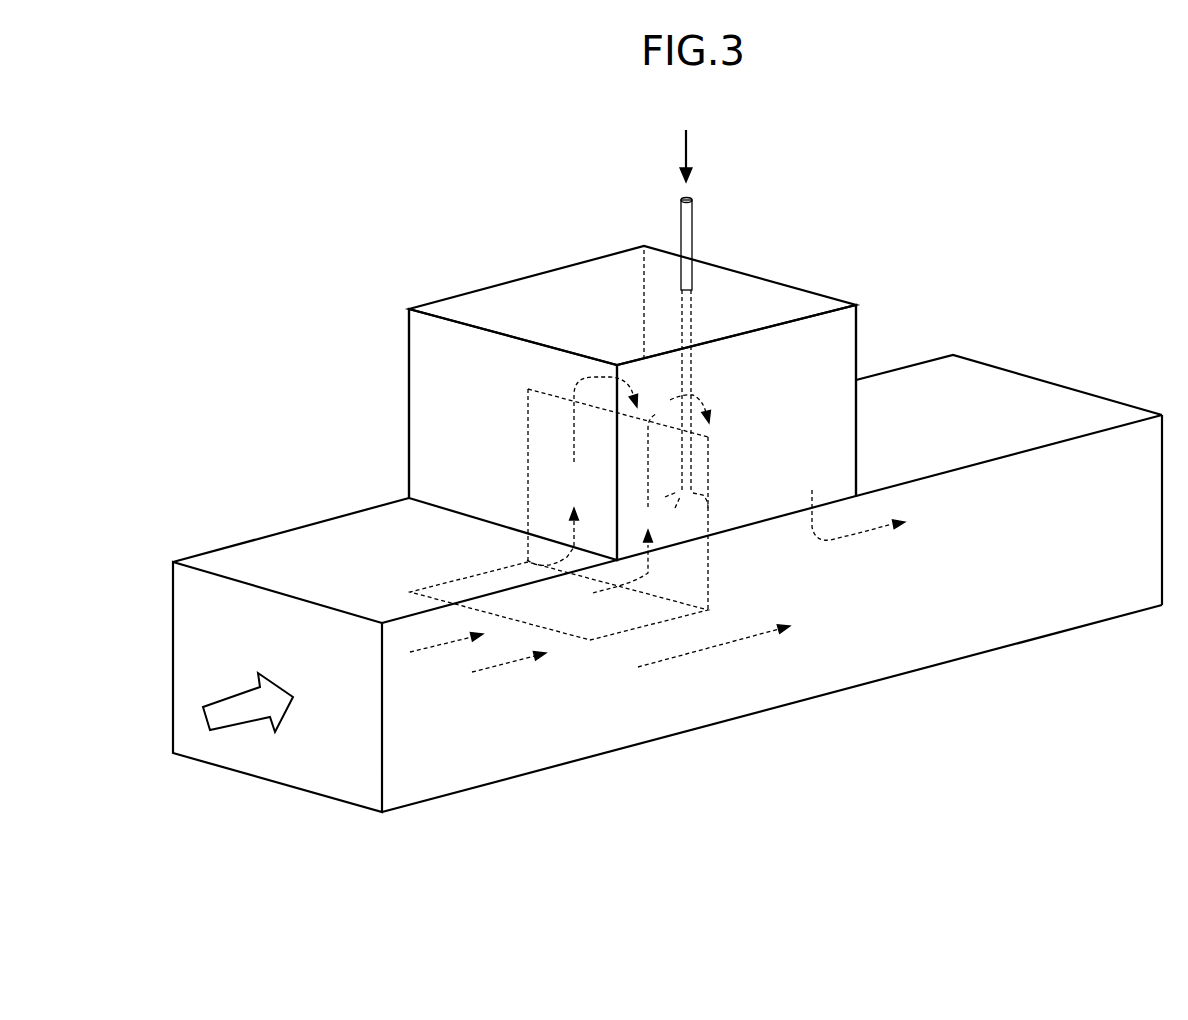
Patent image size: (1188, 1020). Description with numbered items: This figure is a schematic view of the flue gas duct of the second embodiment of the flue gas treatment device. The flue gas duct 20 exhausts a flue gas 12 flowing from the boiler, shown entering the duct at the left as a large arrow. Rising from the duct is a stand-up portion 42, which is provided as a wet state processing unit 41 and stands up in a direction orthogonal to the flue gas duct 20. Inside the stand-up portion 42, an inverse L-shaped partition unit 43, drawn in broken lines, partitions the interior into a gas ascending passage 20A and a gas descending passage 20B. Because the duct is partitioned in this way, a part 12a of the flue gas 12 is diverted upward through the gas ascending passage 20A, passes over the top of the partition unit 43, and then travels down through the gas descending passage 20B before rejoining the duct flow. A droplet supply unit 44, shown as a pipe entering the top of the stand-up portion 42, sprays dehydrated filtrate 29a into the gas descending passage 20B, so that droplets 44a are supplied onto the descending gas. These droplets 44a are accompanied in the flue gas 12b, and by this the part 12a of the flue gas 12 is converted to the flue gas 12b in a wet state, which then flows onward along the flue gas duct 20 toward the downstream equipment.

The flue gas 12 is at (240, 730).
The part of the flue gas 12a is at (578, 381).
The flue gas in a wet state 12b is at (863, 532).
The flue gas duct 20 is at (225, 548).
The gas ascending passage 20A is at (442, 453).
The gas descending passage 20B is at (767, 405).
The dehydrated filtrate 29a is at (690, 148).
The wet state processing unit 41 is at (868, 290).
The stand-up portion 42 is at (409, 330).
The inverse L-shaped partition unit 43 is at (710, 571).
The droplet supply unit 44 is at (693, 233).
The droplets 44a is at (708, 508).